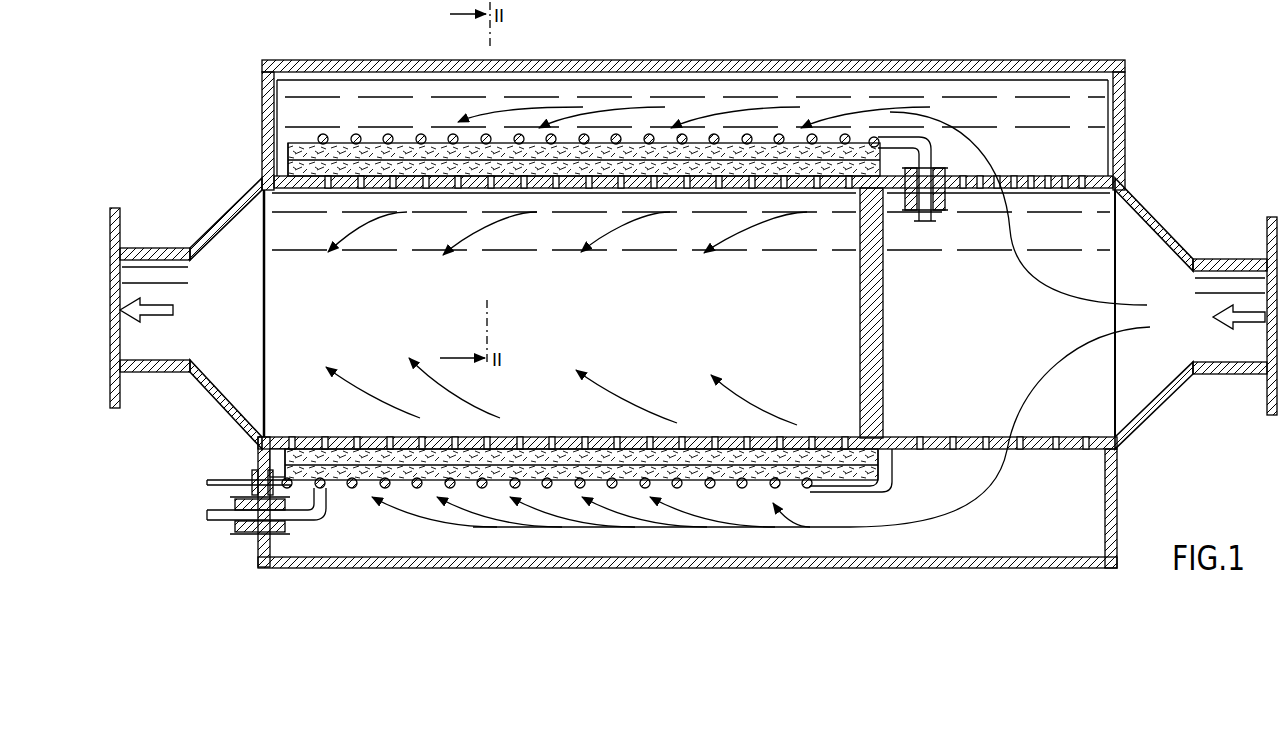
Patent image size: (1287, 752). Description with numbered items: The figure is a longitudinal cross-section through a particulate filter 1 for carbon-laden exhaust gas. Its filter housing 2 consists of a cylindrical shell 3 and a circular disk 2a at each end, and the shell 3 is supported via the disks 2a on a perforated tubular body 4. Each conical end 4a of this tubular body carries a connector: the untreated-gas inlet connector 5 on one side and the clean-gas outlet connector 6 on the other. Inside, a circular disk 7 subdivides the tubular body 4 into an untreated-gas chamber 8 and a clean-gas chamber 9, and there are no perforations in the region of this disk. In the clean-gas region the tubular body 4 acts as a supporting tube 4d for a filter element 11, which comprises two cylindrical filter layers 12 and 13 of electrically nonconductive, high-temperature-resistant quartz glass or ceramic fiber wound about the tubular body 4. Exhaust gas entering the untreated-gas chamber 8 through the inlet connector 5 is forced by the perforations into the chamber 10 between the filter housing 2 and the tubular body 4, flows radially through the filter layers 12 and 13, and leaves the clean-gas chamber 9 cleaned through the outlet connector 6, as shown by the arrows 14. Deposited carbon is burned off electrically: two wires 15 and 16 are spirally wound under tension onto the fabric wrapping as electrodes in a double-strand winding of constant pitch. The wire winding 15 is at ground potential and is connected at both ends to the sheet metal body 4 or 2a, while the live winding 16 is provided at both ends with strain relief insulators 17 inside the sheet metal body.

The particulate filter 1 is at (670, 58).
The filter housing 2 is at (737, 60).
The circular disk 2a is at (262, 117).
The cylindrical shell 3 is at (855, 69).
The perforated tubular body 4 is at (1064, 181).
The conical end 4a is at (214, 228).
The supporting tube 4d is at (441, 192).
The untreated-gas inlet connector 5 is at (1221, 262).
The clean-gas outlet connector 6 is at (145, 362).
The circular disk 7 is at (865, 342).
The untreated-gas chamber 8 is at (1124, 288).
The clean-gas chamber 9 is at (777, 333).
The chamber 10 is at (1037, 110).
The filter element 11 is at (447, 127).
The filter layer 12 is at (298, 146).
The filter layer 13 is at (393, 168).
The arrows 14 is at (784, 107).
The wire winding 15 is at (320, 134).
The winding 16 is at (362, 133).
The strain relief insulator 17 is at (944, 208).